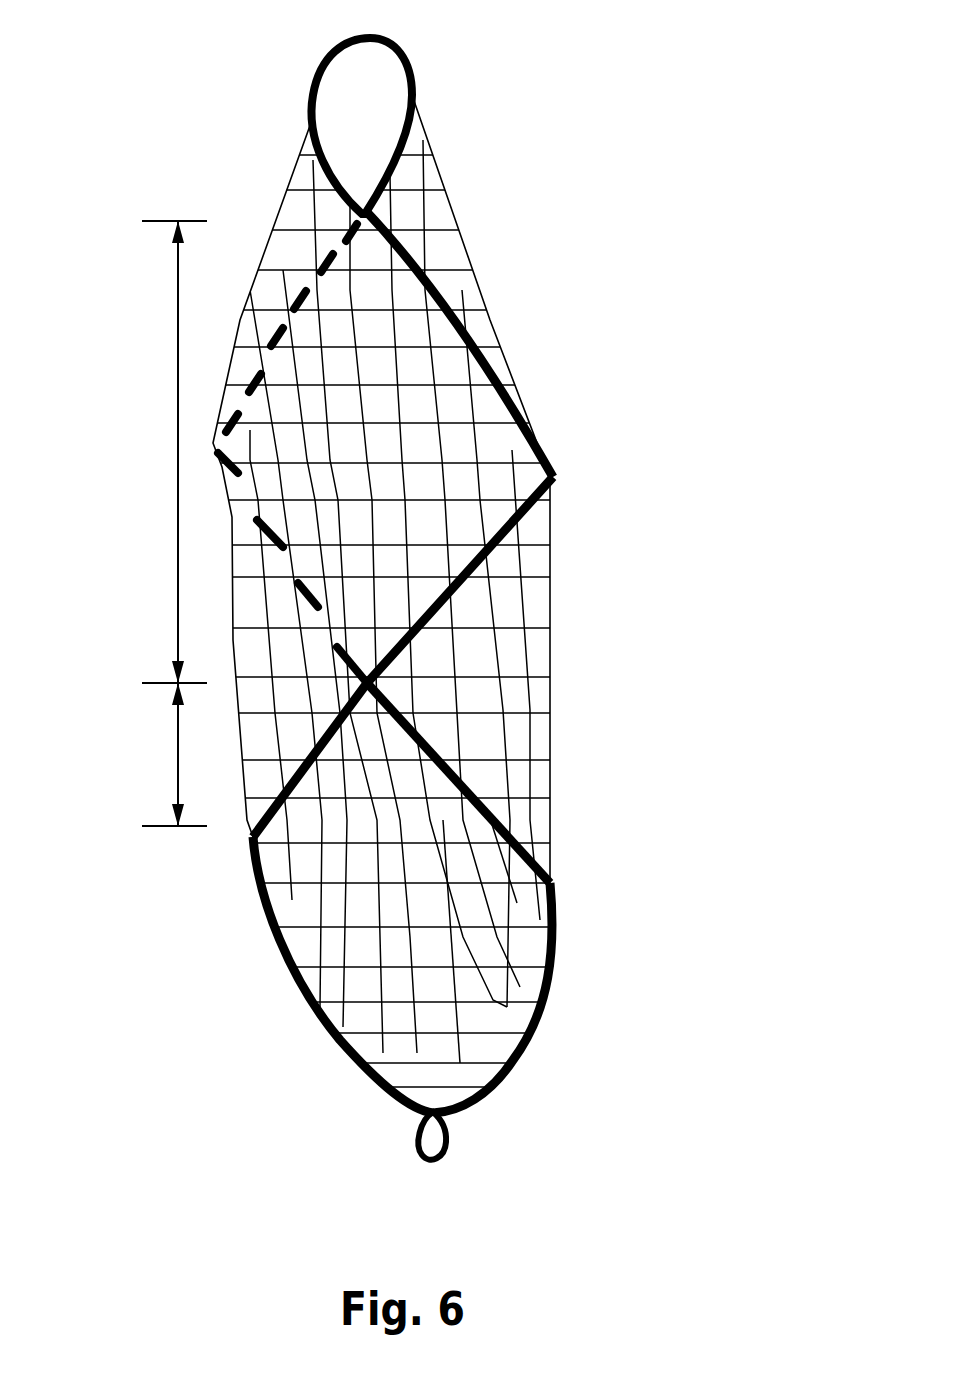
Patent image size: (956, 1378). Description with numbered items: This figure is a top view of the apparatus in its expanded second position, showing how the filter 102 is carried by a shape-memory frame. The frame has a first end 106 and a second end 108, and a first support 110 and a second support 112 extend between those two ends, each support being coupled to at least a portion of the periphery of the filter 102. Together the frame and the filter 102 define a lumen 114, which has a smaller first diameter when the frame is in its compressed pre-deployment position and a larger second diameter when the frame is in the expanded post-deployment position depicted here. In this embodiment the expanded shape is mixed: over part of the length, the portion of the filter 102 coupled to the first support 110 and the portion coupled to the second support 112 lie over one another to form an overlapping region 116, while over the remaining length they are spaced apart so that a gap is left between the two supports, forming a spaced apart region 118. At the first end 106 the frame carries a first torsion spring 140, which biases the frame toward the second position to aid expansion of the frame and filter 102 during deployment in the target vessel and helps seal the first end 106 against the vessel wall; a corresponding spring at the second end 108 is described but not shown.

The filter 102 is at (404, 591).
The first end 106 is at (355, 1112).
The second end 108 is at (278, 75).
The first support 110 is at (445, 302).
The second support 112 is at (490, 803).
The lumen 114 is at (350, 845).
The overlapping region 116 is at (163, 450).
The spaced apart region 118 is at (161, 753).
The first torsion spring 140 is at (450, 1145).